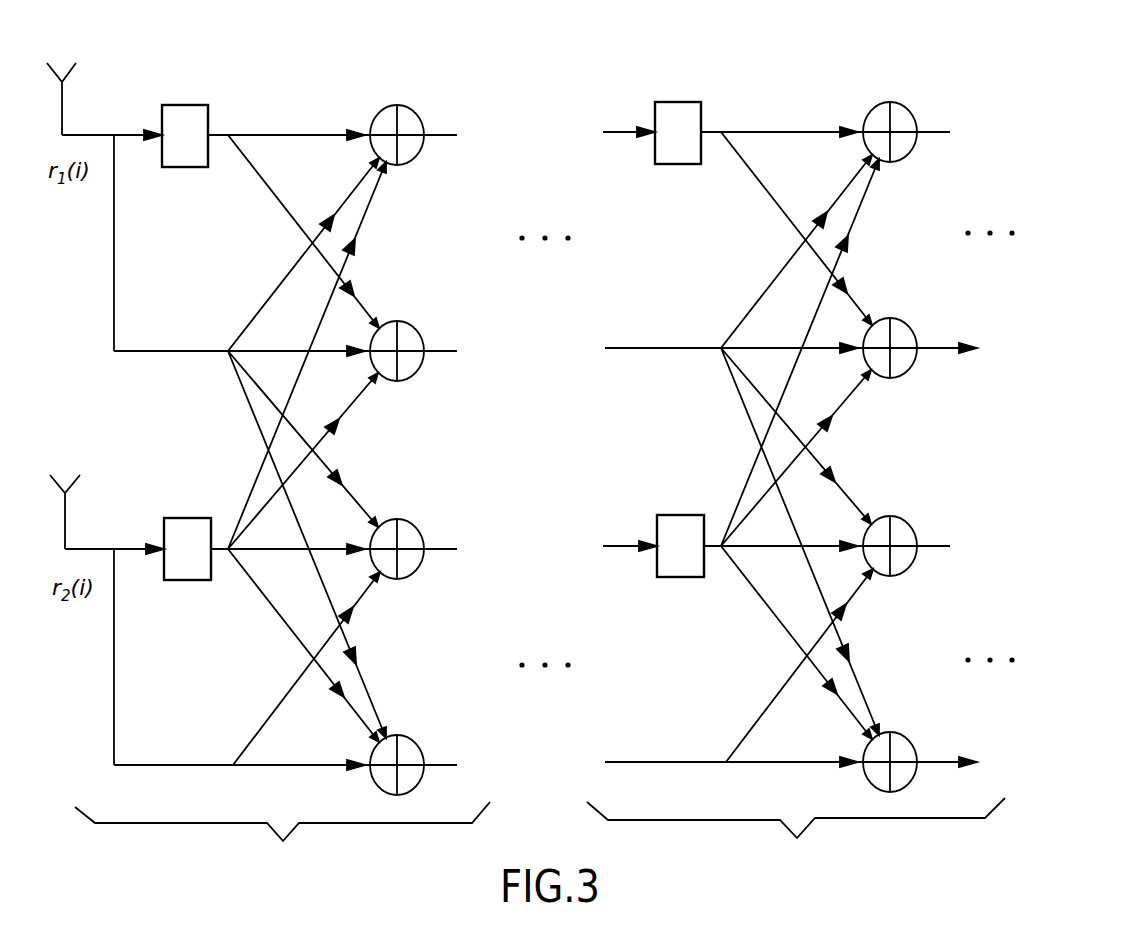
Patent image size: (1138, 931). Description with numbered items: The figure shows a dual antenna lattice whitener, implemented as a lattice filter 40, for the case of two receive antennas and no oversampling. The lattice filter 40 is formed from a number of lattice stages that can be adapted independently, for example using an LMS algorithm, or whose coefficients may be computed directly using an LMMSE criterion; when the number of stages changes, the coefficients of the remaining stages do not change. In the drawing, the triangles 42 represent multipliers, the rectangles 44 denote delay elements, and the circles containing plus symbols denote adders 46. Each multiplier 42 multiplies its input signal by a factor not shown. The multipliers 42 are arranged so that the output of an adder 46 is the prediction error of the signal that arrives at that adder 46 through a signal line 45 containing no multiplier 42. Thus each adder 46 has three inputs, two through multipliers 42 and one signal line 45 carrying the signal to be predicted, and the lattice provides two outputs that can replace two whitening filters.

The lattice filter 40 is at (1083, 33).
The multipliers 42 is at (356, 294).
The delay elements 44 is at (183, 105).
The signal line 45 is at (262, 135).
The adders 46 is at (416, 112).